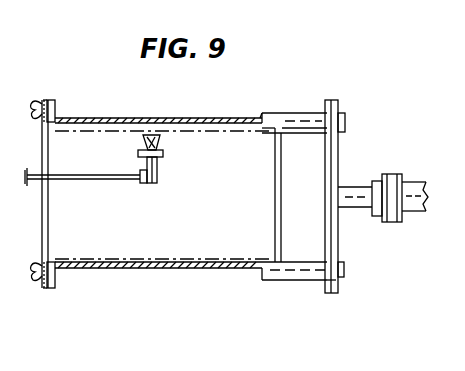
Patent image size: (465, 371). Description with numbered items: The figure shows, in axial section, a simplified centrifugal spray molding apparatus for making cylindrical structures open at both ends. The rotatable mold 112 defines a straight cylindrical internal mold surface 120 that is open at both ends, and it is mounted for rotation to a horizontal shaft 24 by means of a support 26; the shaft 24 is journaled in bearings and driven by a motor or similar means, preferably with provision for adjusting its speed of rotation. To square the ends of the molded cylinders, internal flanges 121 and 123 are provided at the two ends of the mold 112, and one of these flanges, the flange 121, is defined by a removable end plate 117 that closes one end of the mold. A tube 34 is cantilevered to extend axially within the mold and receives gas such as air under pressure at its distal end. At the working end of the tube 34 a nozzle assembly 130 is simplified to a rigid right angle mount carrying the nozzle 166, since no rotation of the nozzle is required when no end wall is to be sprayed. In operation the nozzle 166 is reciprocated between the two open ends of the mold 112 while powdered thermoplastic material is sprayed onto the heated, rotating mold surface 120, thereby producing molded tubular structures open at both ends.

The removable end plate 117 is at (28, 110).
The tube 34 is at (97, 150).
The nozzle 166 is at (158, 142).
The nozzle assembly 130 is at (160, 168).
The internal flange 121 is at (48, 263).
The internal mold surface 120 is at (168, 258).
The rotatable mold 112 is at (150, 270).
The internal flange 123 is at (273, 261).
The support 26 is at (328, 295).
The horizontal shaft 24 is at (357, 208).